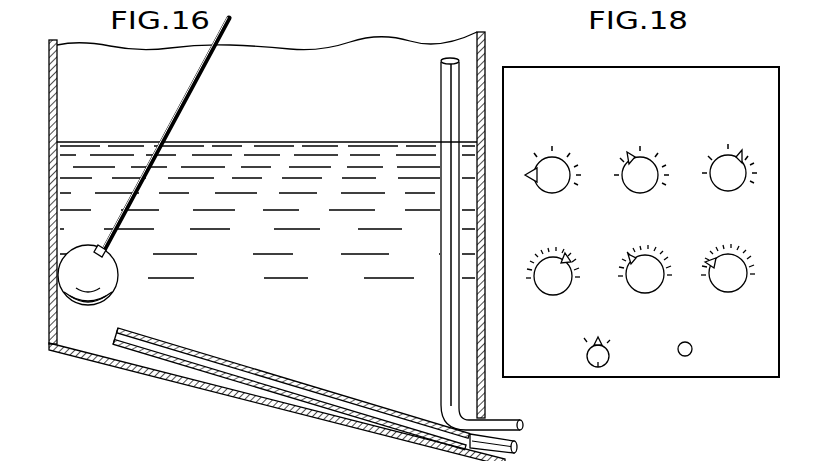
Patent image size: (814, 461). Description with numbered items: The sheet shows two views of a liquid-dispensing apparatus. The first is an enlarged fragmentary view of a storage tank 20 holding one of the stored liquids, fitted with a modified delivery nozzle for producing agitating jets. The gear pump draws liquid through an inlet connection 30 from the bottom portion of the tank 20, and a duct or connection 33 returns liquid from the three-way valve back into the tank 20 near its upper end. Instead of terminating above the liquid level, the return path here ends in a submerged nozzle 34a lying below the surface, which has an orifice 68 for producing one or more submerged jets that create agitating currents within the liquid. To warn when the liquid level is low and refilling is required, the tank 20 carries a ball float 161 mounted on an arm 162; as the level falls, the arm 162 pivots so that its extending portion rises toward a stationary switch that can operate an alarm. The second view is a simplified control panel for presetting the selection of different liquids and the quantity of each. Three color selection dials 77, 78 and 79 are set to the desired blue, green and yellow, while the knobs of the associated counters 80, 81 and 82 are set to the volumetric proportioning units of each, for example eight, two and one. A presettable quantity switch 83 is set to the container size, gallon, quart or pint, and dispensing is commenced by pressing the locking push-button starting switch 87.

In FIG. 16, the storage tank 20 is at (483, 57).
In FIG. 16, the arm 162 is at (183, 113).
In FIG. 16, the ball float 161 is at (68, 272).
In FIG. 16, the orifice 68 is at (279, 368).
In FIG. 16, the submerged nozzle 34a is at (370, 398).
In FIG. 16, the inlet connection 30 is at (503, 420).
In FIG. 16, the duct or connection 33 is at (514, 458).
In FIG. 18, the color selection dial 77 is at (565, 188).
In FIG. 18, the color selection dial 78 is at (653, 188).
In FIG. 18, the color selection dial 79 is at (740, 186).
In FIG. 18, the counter 80 is at (546, 285).
In FIG. 18, the counter 81 is at (655, 284).
In FIG. 18, the counter 82 is at (737, 288).
In FIG. 18, the quantity switch 83 is at (597, 368).
In FIG. 18, the starting switch 87 is at (692, 349).